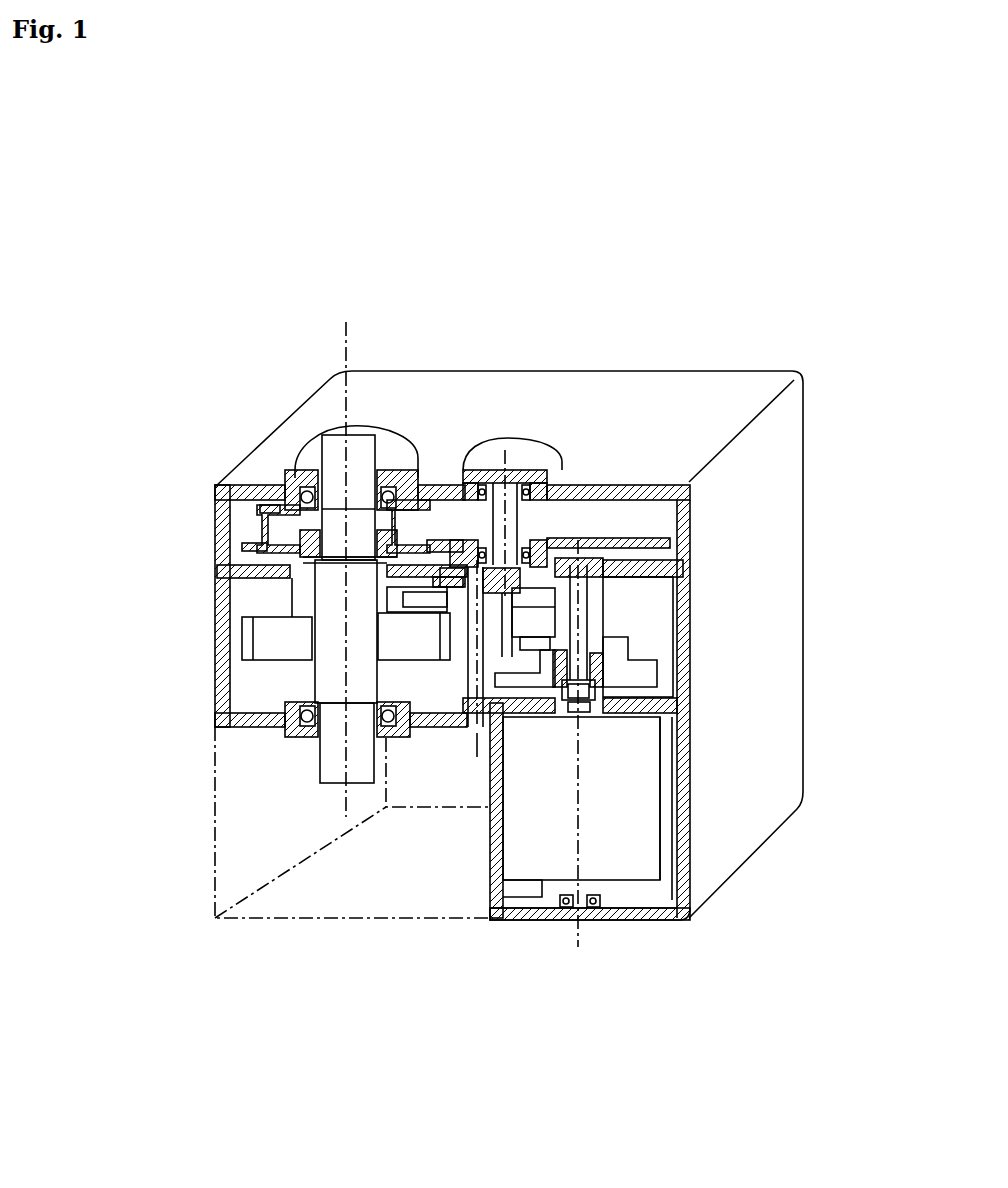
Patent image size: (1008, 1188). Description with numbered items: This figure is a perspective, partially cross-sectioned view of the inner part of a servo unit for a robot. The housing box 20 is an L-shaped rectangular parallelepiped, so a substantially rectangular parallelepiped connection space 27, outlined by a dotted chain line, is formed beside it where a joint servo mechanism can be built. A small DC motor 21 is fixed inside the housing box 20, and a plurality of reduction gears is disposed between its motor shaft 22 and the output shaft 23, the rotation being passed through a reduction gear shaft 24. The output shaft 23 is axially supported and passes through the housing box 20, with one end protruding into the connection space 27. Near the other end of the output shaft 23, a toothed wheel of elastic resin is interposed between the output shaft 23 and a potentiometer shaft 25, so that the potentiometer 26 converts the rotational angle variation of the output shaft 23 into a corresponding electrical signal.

The housing box 20 is at (776, 772).
The small DC motor 21 is at (632, 860).
The motor shaft 22 is at (577, 925).
The output shaft 23 is at (345, 362).
The reduction gear shaft 24 is at (477, 747).
The potentiometer shaft 25 is at (527, 442).
The potentiometer 26 is at (547, 530).
The connection space 27 is at (272, 832).